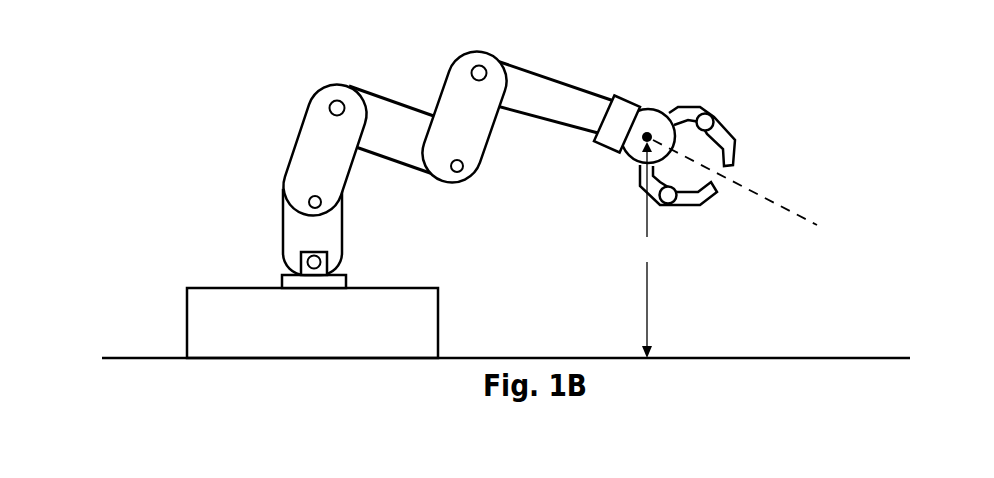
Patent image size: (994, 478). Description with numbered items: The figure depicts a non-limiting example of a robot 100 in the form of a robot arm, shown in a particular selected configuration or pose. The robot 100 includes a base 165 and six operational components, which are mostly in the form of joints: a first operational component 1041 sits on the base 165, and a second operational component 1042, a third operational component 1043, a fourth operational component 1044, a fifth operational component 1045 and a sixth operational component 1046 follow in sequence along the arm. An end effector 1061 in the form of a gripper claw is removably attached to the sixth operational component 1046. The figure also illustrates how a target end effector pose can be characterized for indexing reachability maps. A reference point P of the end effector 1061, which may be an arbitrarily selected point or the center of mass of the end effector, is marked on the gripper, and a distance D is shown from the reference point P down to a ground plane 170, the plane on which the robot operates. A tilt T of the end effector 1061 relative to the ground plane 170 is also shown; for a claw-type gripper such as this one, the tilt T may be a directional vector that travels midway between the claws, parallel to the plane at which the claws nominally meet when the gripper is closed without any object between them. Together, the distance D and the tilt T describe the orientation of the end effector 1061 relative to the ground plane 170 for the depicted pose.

The robot 100 is at (465, 149).
The first operational component 1041 is at (302, 258).
The second operational component 1042 is at (312, 201).
The third operational component 1043 is at (330, 90).
The fourth operational component 1044 is at (459, 170).
The fifth operational component 1045 is at (478, 52).
The sixth operational component 1046 is at (625, 93).
The end effector 1061 is at (746, 109).
The base 165 is at (383, 287).
The ground plane 170 is at (740, 358).
The reference point P is at (648, 134).
The tilt T is at (768, 200).
The distance D is at (648, 250).